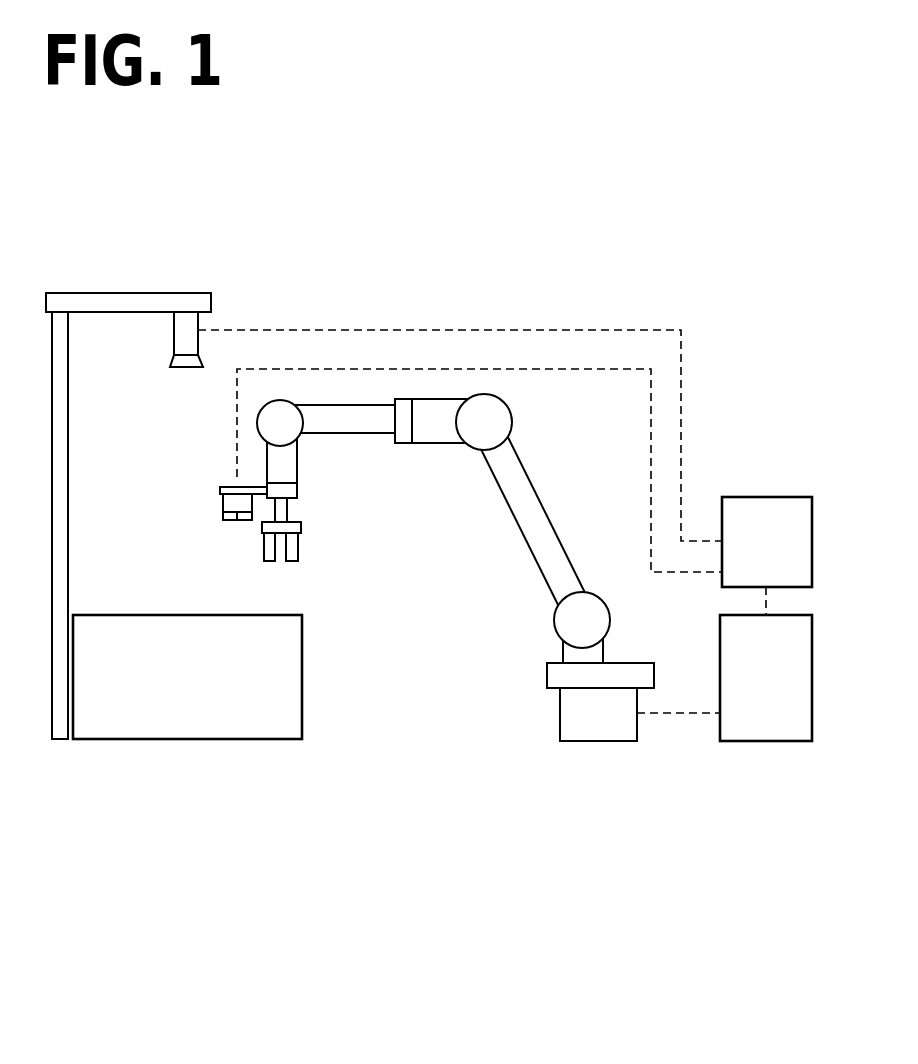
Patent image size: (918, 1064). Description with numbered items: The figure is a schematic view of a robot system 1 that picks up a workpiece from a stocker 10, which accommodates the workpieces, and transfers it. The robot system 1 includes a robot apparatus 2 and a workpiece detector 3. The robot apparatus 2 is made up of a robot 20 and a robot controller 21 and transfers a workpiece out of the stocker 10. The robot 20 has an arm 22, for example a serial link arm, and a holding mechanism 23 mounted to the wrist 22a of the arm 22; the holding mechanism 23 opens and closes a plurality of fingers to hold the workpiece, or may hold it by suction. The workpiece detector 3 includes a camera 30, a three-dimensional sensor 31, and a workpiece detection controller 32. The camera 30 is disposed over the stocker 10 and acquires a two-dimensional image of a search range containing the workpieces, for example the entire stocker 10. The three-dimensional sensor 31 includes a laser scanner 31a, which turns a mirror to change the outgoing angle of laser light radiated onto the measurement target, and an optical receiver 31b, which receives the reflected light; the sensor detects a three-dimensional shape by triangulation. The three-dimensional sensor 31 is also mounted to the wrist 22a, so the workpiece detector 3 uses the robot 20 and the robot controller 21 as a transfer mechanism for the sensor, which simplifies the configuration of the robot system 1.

The robot system 1 is at (501, 198).
The robot apparatus 2 is at (526, 818).
The workpiece detector 3 is at (729, 587).
The stocker 10 is at (217, 715).
The robot 20 is at (512, 612).
The robot controller 21 is at (763, 741).
The arm 22 is at (513, 502).
The wrist 22a is at (297, 488).
The holding mechanism 23 is at (288, 511).
The camera 30 is at (198, 318).
The three-dimensional sensor 31 is at (205, 523).
The laser scanner 31a is at (228, 519).
The optical receiver 31b is at (243, 523).
The workpiece detection controller 32 is at (793, 497).